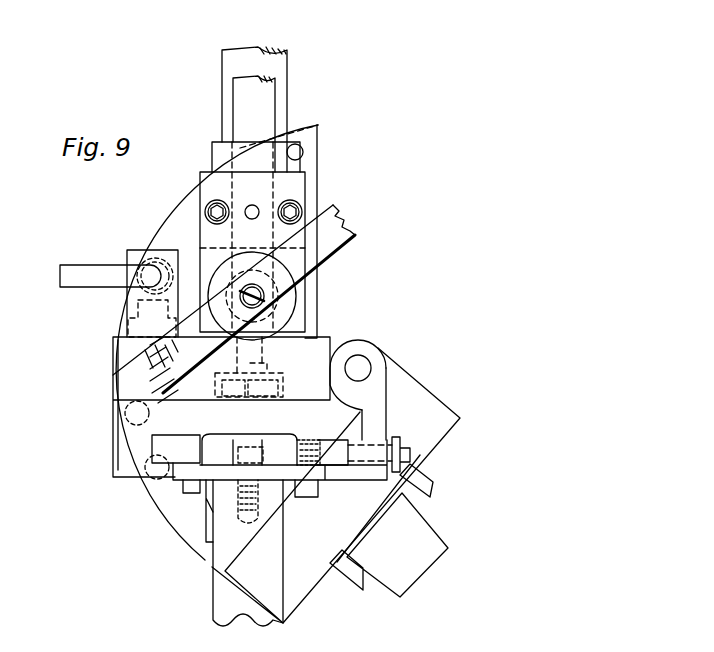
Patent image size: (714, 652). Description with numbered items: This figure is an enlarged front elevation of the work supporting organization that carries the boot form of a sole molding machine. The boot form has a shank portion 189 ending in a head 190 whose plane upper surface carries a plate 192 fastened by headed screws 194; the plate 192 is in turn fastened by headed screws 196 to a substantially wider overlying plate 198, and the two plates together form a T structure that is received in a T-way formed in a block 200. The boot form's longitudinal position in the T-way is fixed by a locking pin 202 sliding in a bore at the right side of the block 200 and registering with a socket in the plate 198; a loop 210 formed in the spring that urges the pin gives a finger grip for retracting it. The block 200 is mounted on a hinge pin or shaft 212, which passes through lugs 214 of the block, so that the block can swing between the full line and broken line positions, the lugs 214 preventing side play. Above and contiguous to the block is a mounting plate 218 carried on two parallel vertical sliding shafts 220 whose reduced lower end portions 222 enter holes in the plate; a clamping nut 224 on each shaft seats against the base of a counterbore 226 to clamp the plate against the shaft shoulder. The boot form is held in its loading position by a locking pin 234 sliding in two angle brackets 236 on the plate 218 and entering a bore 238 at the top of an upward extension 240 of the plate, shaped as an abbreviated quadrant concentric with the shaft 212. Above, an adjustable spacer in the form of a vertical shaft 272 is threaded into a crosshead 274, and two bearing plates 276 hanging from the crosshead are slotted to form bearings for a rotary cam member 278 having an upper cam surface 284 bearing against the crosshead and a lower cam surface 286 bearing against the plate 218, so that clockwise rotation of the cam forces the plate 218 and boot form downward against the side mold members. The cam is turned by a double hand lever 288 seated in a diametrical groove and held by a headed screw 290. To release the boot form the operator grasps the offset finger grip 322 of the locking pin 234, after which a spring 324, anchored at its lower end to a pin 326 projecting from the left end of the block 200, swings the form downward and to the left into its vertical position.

The shank portion 189 is at (270, 563).
The head 190 is at (207, 489).
The plate 192 is at (270, 477).
The headed screws 194 is at (272, 430).
The headed screws 196 is at (182, 485).
The plate 198 is at (160, 448).
The block 200 is at (132, 438).
The locking pin 202 is at (412, 454).
The loop 210 is at (397, 440).
The hinge pin or shaft 212 is at (364, 366).
The lugs 214 is at (367, 345).
The mounting plate 218 is at (340, 340).
The vertical sliding shafts 220 is at (265, 99).
The reduced lower end portions 222 is at (258, 352).
The clamping nut 224 is at (260, 397).
The counterbore 226 is at (222, 396).
The locking pin 234 is at (152, 272).
The angle brackets 236 is at (160, 250).
The bore 238 is at (305, 150).
The upward extension 240 is at (343, 160).
The vertical shaft 272 is at (283, 66).
The crosshead 274 is at (296, 275).
The bearing plates 276 is at (297, 185).
The rotary cam member 278 is at (245, 263).
The upper cam surface 284 is at (210, 253).
The lower cam surface 286 is at (278, 296).
The double hand lever 288 is at (340, 236).
The headed screw 290 is at (265, 302).
The offset finger grip 322 is at (73, 265).
The spring 324 is at (140, 396).
The pin 326 is at (126, 413).